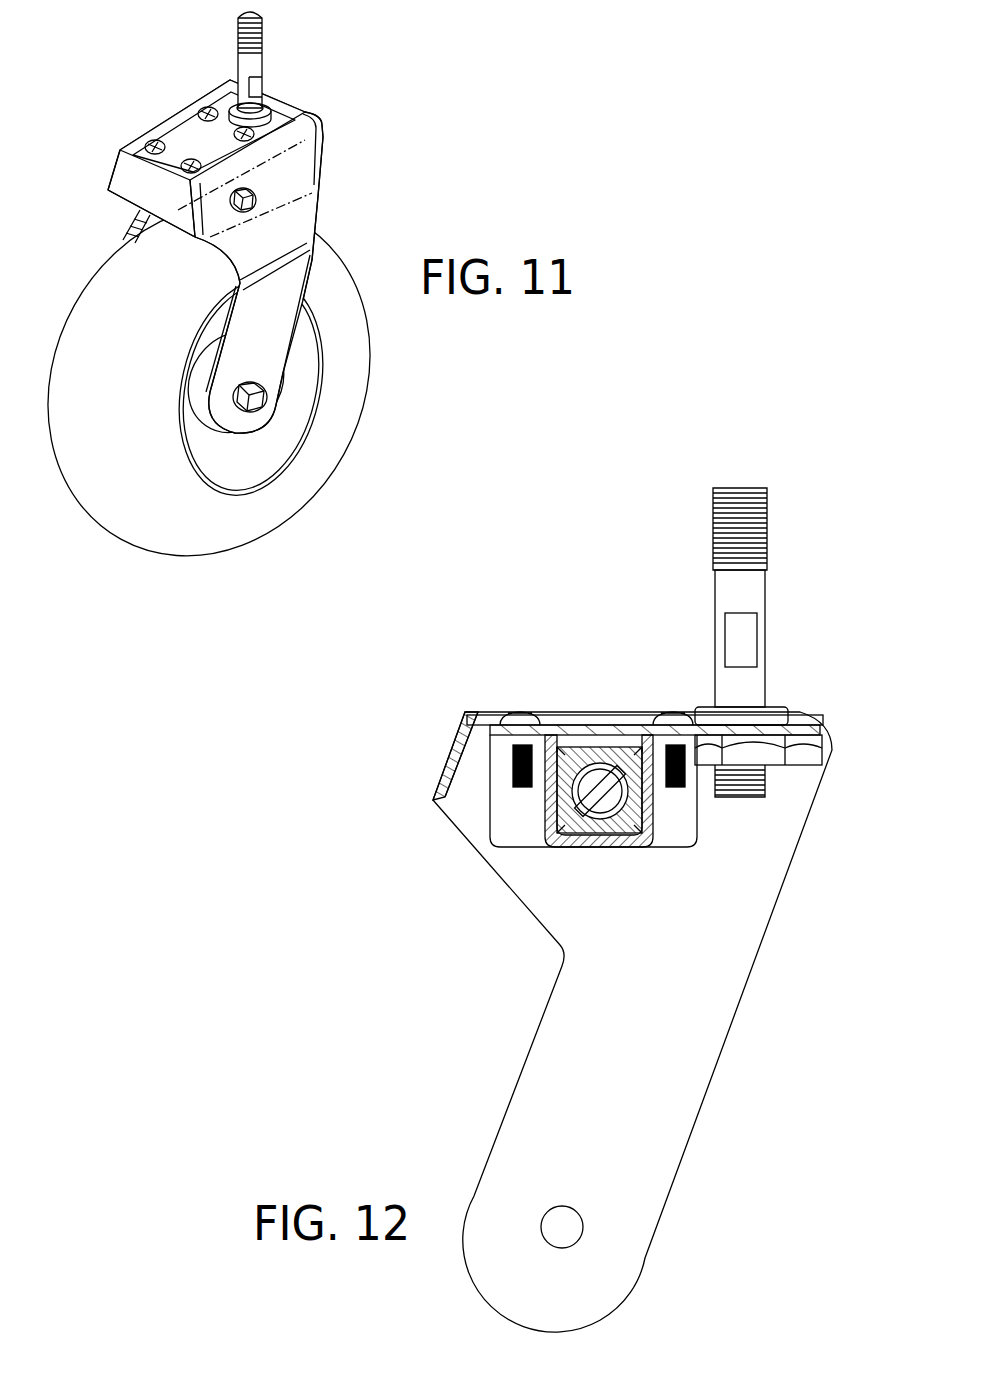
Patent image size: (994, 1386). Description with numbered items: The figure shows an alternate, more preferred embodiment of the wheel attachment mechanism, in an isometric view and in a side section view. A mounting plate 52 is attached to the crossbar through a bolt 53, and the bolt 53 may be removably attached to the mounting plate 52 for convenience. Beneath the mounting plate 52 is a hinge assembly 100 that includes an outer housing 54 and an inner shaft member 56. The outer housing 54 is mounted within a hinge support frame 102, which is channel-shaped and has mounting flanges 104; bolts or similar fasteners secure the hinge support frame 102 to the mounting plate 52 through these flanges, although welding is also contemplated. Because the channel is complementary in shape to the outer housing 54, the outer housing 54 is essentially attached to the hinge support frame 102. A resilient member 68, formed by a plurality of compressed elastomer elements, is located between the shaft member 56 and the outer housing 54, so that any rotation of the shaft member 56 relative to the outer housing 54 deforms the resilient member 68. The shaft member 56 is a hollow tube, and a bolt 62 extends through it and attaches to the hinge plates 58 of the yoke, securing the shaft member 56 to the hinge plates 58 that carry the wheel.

In FIG. 11, the mounting plate 52 is at (187, 140).
In FIG. 12, the mounting plate 52 is at (613, 727).
In FIG. 11, the bolt 53 is at (257, 65).
In FIG. 12, the bolt 53 is at (745, 588).
In FIG. 12, the outer housing 54 is at (588, 752).
In FIG. 12, the inner shaft member 56 is at (607, 797).
In FIG. 11, the hinge plates 58 is at (258, 347).
In FIG. 12, the hinge plates 58 is at (630, 1108).
In FIG. 11, the bolt 62 is at (258, 198).
In FIG. 12, the resilient member 68 is at (575, 830).
In FIG. 12, the hinge assembly 100 is at (669, 872).
In FIG. 12, the hinge support frame 102 is at (598, 848).
In FIG. 12, the mounting flanges 104 is at (505, 782).